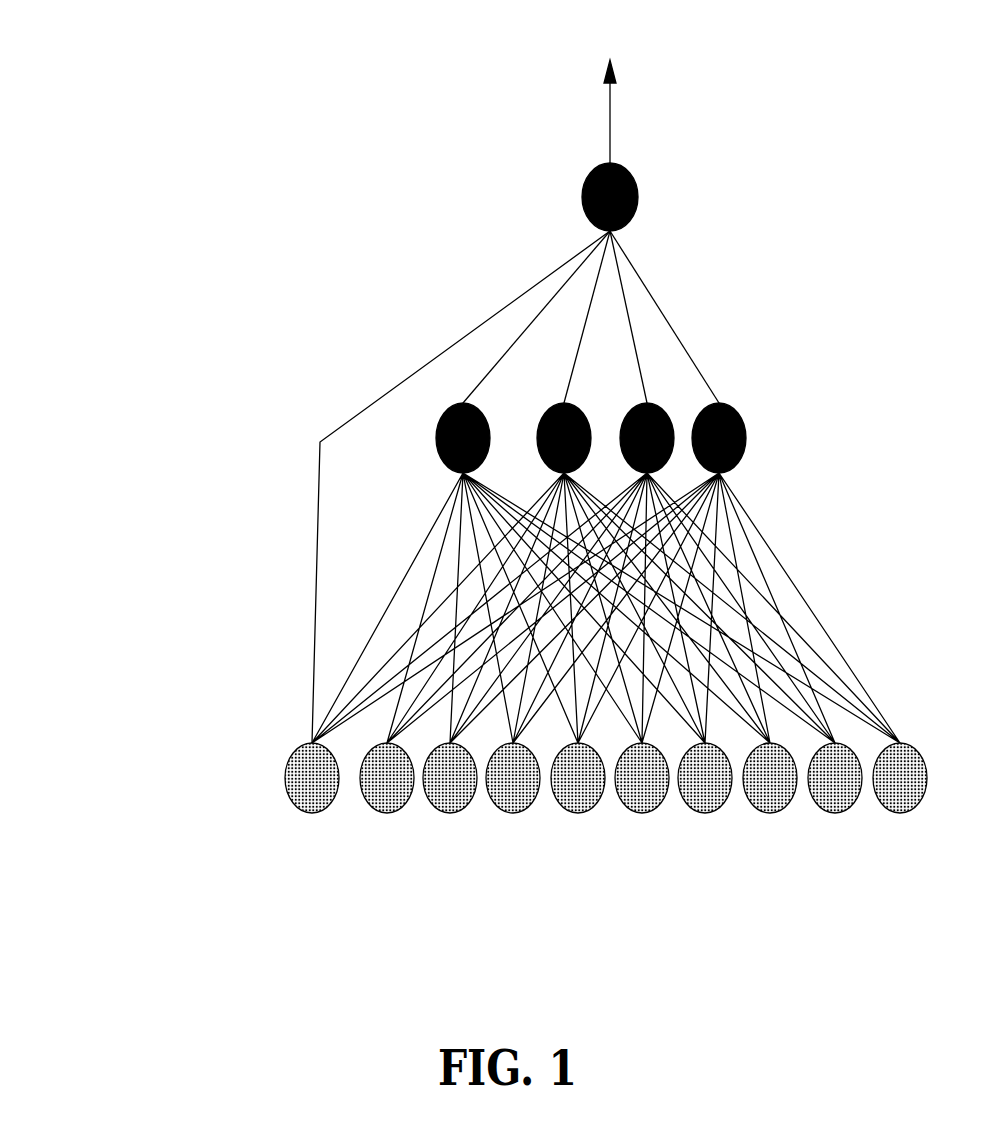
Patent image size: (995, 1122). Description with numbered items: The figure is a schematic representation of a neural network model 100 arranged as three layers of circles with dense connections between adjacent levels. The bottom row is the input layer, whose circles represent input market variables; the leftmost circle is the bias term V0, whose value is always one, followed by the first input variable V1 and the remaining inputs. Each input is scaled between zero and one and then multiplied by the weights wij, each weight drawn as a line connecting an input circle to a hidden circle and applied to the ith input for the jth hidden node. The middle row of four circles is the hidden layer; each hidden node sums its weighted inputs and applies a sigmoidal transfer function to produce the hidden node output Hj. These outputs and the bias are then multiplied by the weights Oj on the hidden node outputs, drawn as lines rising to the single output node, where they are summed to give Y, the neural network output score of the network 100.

The neural network model 100 is at (737, 77).
The neural network output score Y is at (581, 201).
The weights on the outputs of the hidden nodes Oj is at (515, 487).
The output of the jth hidden node Hj is at (456, 443).
The weights wij is at (606, 608).
The bias term input V0 is at (312, 790).
The first input variable V1 is at (387, 790).